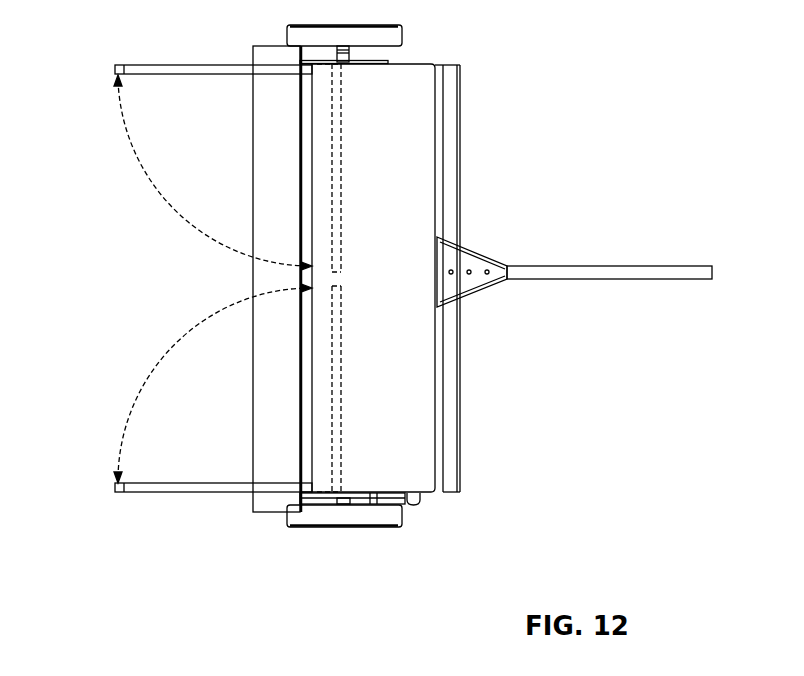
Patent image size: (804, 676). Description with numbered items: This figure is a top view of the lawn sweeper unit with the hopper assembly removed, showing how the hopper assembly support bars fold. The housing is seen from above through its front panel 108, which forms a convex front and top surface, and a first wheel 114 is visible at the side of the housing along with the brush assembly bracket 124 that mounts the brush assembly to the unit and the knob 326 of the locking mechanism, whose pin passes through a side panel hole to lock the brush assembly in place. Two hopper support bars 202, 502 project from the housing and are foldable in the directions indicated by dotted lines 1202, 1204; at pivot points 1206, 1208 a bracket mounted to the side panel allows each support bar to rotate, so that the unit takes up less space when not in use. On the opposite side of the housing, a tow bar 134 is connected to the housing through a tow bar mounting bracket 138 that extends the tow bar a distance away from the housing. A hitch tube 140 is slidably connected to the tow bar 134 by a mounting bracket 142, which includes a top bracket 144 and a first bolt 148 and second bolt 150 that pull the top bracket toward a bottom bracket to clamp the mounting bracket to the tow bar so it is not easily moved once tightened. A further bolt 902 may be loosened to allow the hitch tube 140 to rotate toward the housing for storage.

The front panel 108 is at (423, 399).
The first wheel 114 is at (317, 527).
The brush assembly bracket 124 is at (407, 504).
The tow bar 134 is at (452, 122).
The tow bar mounting bracket 138 is at (438, 493).
The hitch tube 140 is at (670, 263).
The mounting bracket 142 is at (535, 281).
The top bracket 144 is at (465, 285).
The first bolt 148 is at (450, 266).
The second bolt 150 is at (488, 262).
The hopper support bar 202 is at (188, 63).
The knob 326 is at (418, 503).
The hopper support bar 502 is at (178, 492).
The bolt 902 is at (491, 270).
The dotted line 1202 is at (173, 338).
The dotted line 1204 is at (170, 210).
The pivot point 1206 is at (335, 490).
The pivot point 1208 is at (336, 68).